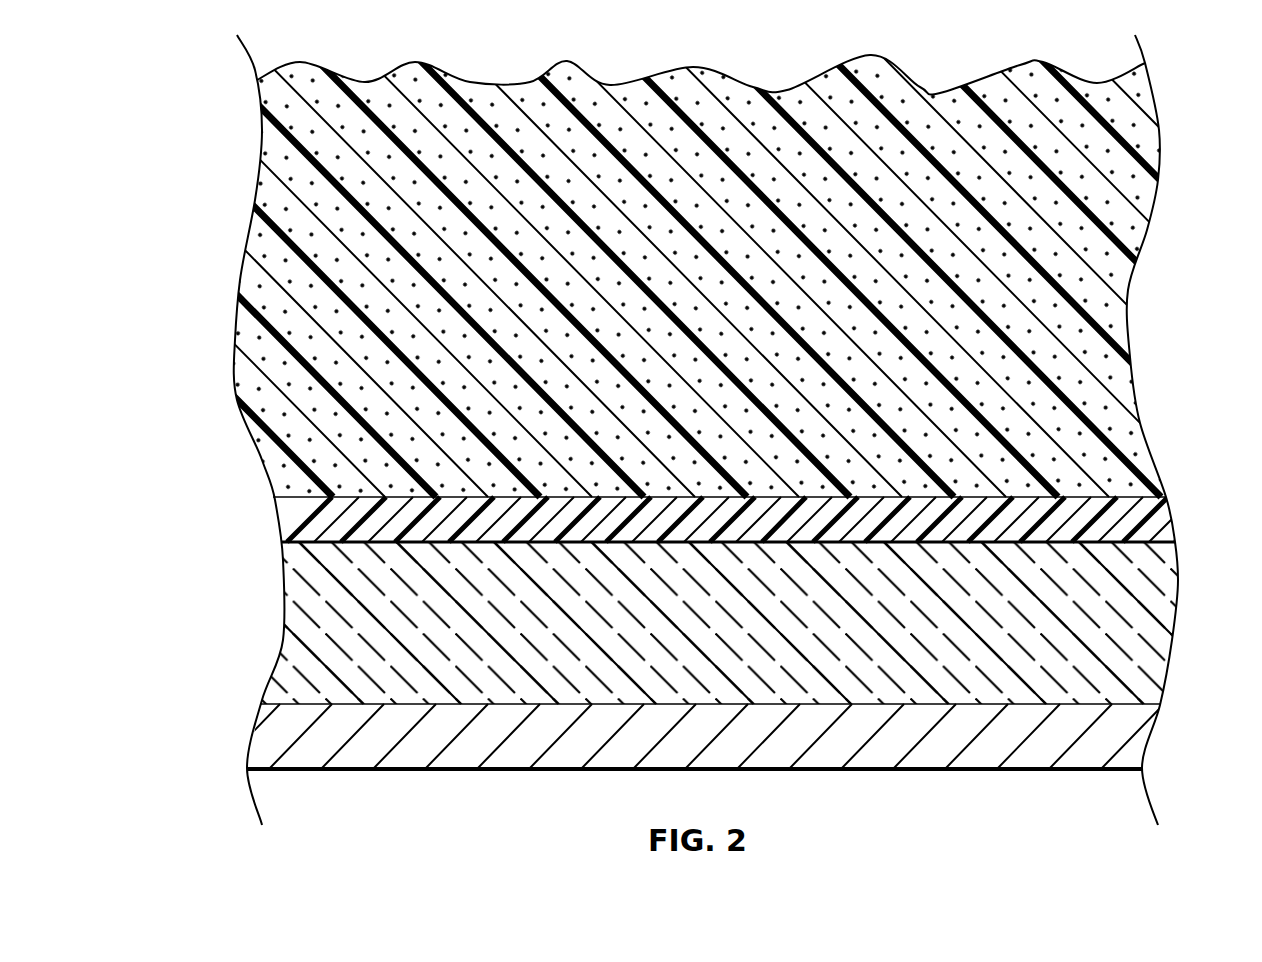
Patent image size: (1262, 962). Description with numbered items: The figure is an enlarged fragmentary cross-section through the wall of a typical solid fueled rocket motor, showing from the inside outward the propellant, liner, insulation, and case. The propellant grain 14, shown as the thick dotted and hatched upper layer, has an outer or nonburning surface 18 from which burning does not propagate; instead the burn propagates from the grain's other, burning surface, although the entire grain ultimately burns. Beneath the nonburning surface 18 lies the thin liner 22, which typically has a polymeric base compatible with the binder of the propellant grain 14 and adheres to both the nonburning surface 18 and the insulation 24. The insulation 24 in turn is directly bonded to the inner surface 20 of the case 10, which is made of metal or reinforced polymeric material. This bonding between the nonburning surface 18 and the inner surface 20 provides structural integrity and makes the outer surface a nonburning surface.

The case 10 is at (282, 742).
The propellant grain 14 is at (262, 306).
The outer or nonburning surface 18 is at (1104, 503).
The inner surface of case 20 is at (1137, 708).
The liner 22 is at (292, 523).
The insulation 24 is at (303, 660).